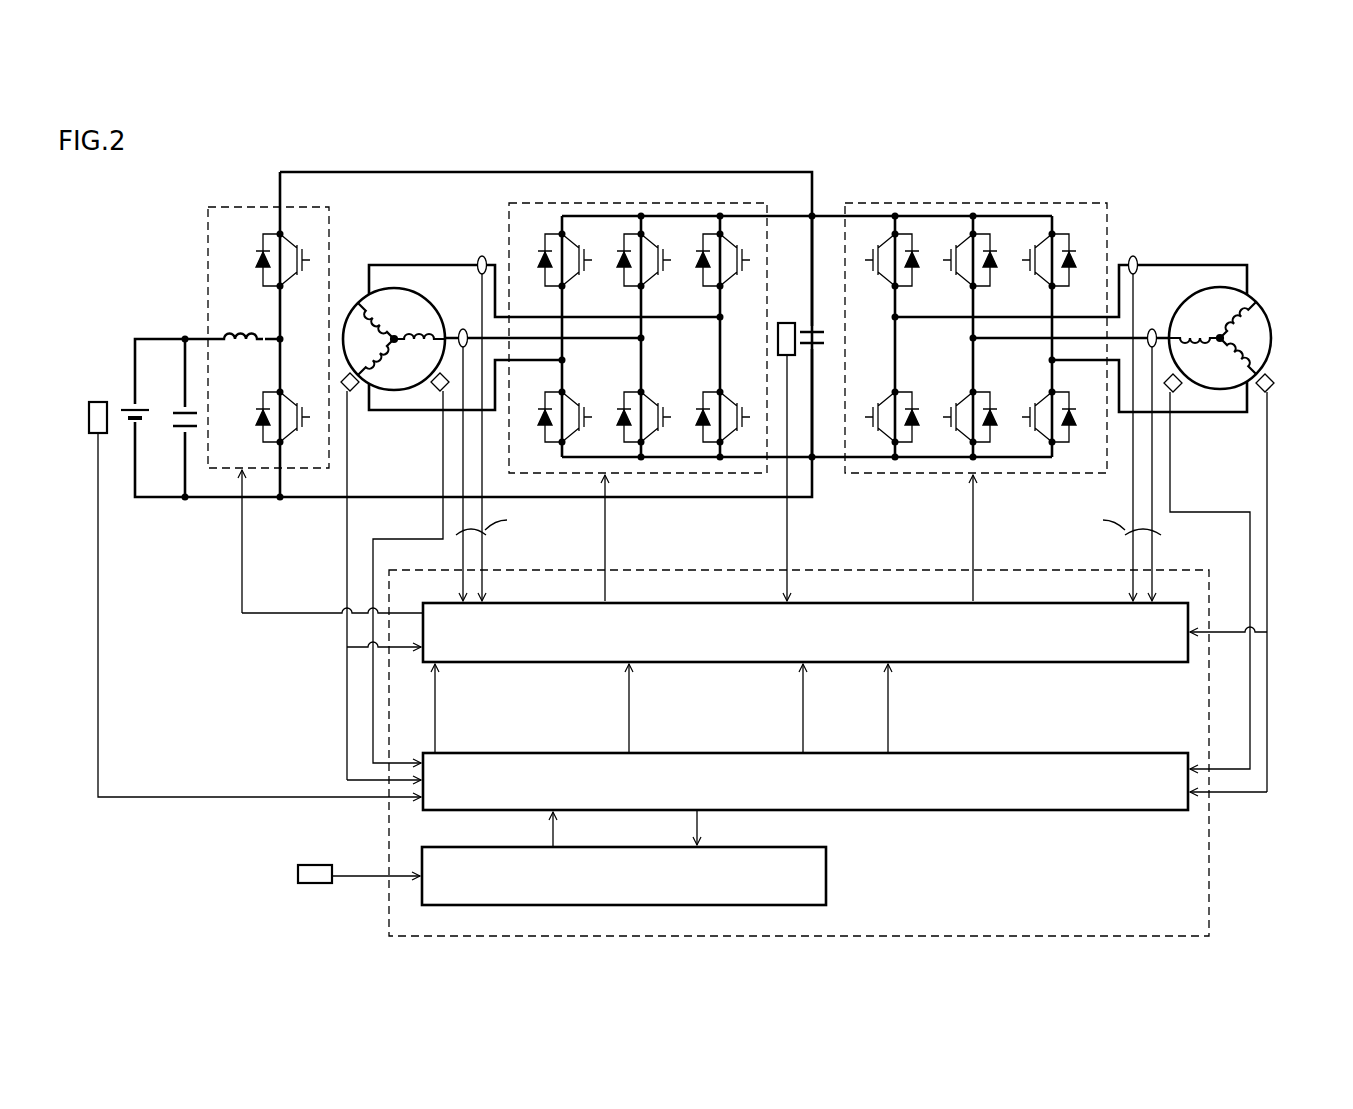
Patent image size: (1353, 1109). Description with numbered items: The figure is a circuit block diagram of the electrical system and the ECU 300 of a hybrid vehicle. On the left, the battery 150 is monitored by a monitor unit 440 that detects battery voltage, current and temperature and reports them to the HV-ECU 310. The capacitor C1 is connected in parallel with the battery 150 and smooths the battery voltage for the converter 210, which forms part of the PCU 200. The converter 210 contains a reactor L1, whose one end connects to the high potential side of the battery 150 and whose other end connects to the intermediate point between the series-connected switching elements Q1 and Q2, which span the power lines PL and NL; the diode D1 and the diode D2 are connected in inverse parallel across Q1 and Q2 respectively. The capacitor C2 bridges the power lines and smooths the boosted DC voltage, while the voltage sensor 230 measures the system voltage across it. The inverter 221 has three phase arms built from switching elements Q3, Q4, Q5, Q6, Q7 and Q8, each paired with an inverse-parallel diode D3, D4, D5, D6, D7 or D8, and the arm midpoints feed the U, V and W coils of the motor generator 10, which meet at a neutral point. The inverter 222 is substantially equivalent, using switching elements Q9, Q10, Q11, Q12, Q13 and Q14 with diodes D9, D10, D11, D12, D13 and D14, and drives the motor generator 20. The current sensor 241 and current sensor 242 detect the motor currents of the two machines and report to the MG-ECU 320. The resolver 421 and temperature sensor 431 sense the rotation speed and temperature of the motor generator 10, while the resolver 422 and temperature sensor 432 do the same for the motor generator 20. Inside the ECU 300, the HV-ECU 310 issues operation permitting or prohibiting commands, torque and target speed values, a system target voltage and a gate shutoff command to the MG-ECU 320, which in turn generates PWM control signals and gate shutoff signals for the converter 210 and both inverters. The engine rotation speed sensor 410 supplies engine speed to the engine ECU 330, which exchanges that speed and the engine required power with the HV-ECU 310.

The PCU 200 is at (1133, 163).
The converter 210 is at (245, 207).
The inverter 221 is at (700, 206).
The inverter 222 is at (1040, 206).
The voltage sensor 230 is at (786, 323).
The current sensor 241 is at (482, 254).
The current sensor 242 is at (1133, 254).
The motor generator 10 is at (374, 286).
The motor generator 20 is at (1258, 306).
The battery 150 is at (144, 408).
The monitor unit 440 is at (98, 402).
The resolver 421 is at (355, 392).
The temperature sensor 431 is at (434, 392).
The resolver 422 is at (1273, 385).
The temperature sensor 432 is at (1178, 392).
The ECU 300 is at (1190, 570).
The HV-ECU 310 is at (1170, 812).
The MG-ECU 320 is at (1172, 663).
The engine ECU 330 is at (828, 876).
The engine rotation speed sensor 410 is at (298, 876).
The switching element Q1 is at (298, 255).
The switching element Q2 is at (298, 411).
The switching element Q3 is at (583, 255).
The switching element Q4 is at (583, 411).
The switching element Q5 is at (661, 255).
The switching element Q6 is at (661, 411).
The switching element Q7 is at (740, 255).
The switching element Q8 is at (740, 411).
The switching element Q9 is at (873, 255).
The switching element Q10 is at (872, 411).
The switching element Q11 is at (950, 255).
The switching element Q12 is at (950, 411).
The switching element Q13 is at (1029, 255).
The switching element Q14 is at (1029, 411).
The diode D1 is at (256, 262).
The diode D2 is at (256, 421).
The diode D3 is at (540, 262).
The diode D4 is at (540, 421).
The diode D5 is at (619, 262).
The diode D6 is at (619, 421).
The diode D7 is at (698, 262).
The diode D8 is at (698, 421).
The diode D9 is at (915, 269).
The diode D10 is at (921, 424).
The diode D11 is at (998, 269).
The diode D12 is at (999, 424).
The diode D13 is at (1076, 269).
The diode D14 is at (1076, 440).
The reactor L1 is at (242, 331).
The capacitor C1 is at (177, 432).
The capacitor C2 is at (816, 328).